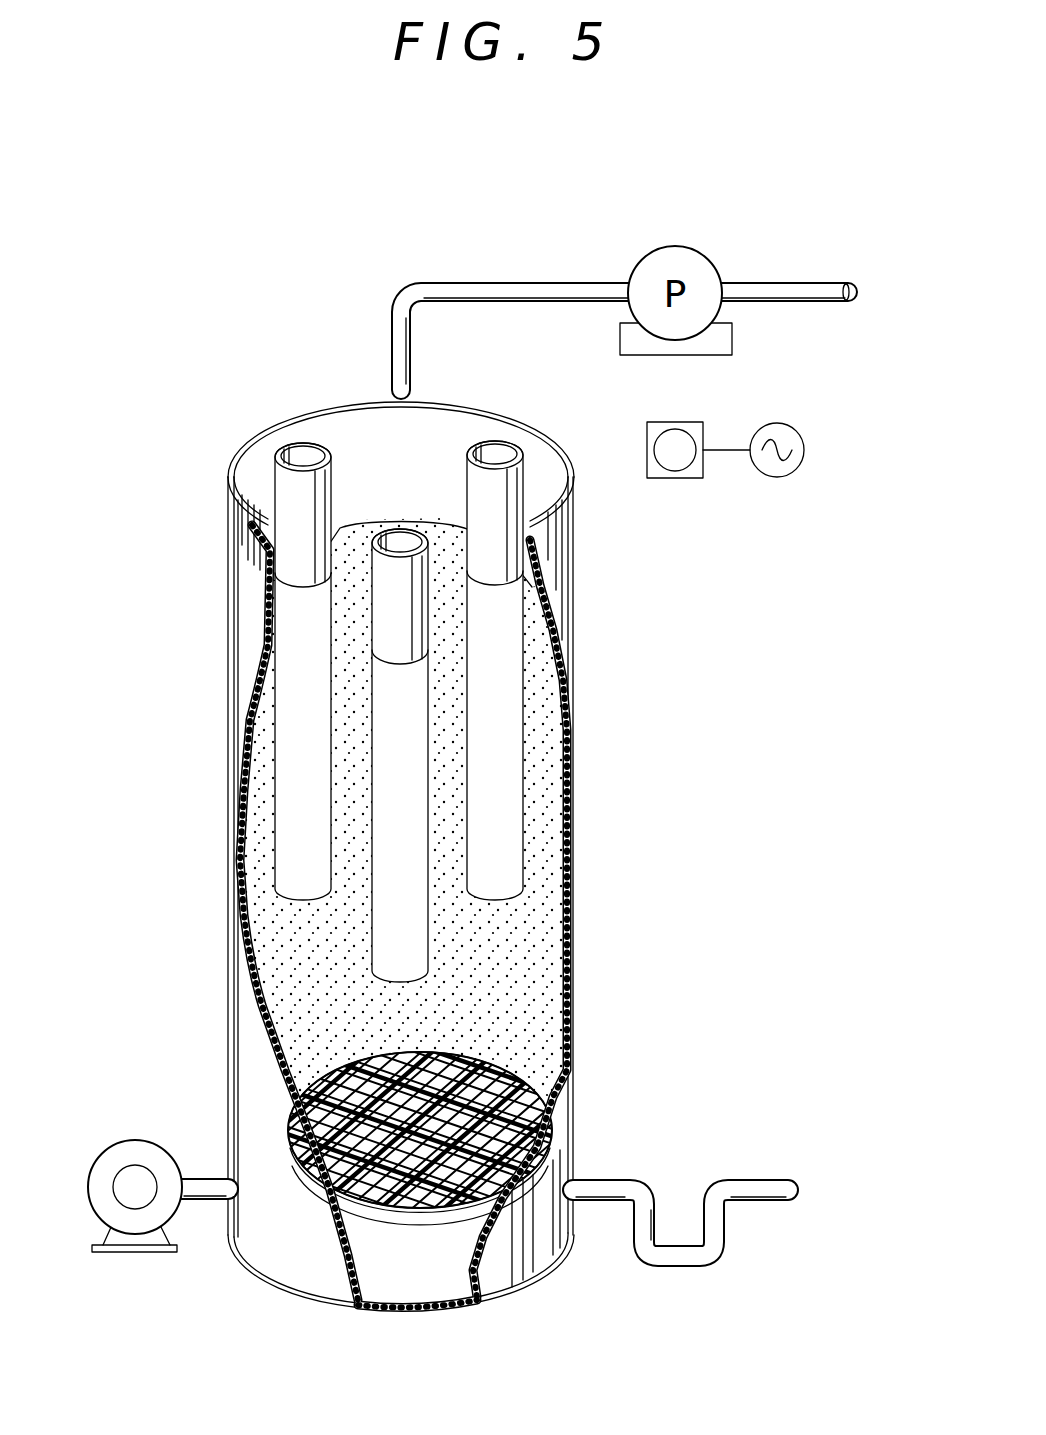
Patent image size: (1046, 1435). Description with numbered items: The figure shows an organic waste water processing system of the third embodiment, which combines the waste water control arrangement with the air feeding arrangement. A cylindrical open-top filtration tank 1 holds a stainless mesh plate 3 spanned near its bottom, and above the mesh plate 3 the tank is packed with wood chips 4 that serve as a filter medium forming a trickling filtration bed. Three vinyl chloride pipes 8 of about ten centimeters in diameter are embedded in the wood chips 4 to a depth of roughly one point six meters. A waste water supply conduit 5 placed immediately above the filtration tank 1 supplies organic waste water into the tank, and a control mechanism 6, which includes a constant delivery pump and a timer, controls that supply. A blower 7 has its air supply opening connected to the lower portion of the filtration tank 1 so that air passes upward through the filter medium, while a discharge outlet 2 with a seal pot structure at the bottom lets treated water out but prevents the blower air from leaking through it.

The filtration tank 1 is at (560, 590).
The discharge outlet 2 is at (630, 1188).
The stainless mesh plate 3 is at (475, 1058).
The wood chips 4 is at (522, 932).
The waste water supply conduit 5 is at (392, 338).
The control mechanism 6 is at (752, 391).
The blower 7 is at (135, 1150).
The vinyl chloride pipes 8 is at (508, 706).